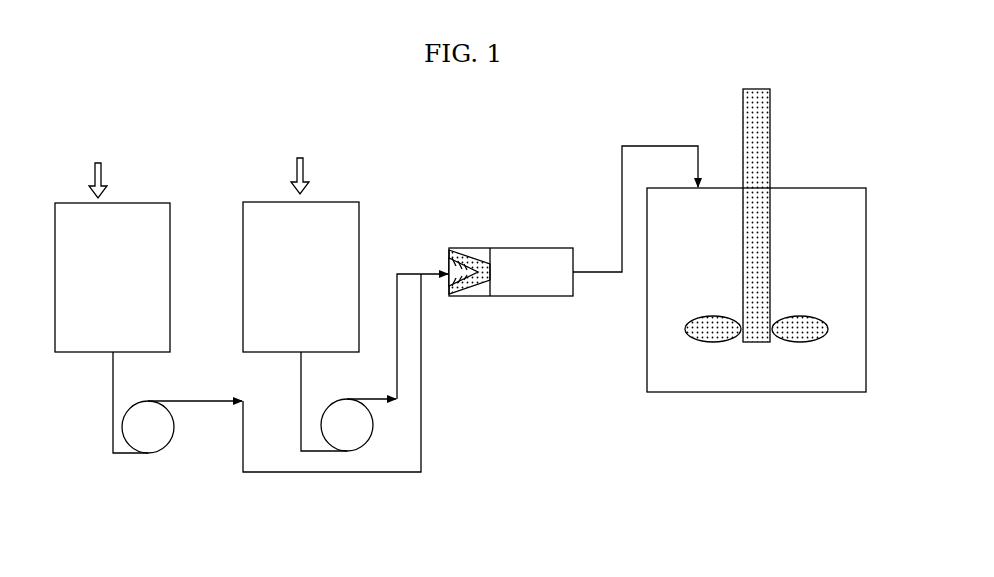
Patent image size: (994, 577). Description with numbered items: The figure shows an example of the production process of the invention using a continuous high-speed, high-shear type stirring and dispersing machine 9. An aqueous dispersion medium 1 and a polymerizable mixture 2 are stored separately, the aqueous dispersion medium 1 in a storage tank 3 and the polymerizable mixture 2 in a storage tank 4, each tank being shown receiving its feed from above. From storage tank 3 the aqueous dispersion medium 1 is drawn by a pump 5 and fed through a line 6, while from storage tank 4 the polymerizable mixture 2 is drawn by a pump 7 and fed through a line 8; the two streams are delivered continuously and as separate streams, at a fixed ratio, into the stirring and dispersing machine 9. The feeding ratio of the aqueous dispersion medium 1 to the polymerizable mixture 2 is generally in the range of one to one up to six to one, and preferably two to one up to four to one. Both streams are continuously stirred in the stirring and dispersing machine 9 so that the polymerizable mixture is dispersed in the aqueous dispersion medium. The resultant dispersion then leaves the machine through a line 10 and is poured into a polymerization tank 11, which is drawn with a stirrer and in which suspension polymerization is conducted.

The aqueous dispersion medium 1 is at (98, 167).
The polymerizable mixture 2 is at (300, 162).
The storage tank 3 is at (170, 252).
The storage tank 4 is at (359, 250).
The pump 5 is at (174, 430).
The line 6 is at (421, 390).
The pump 7 is at (373, 430).
The line 8 is at (397, 374).
The continuous high-speed, high-shear type stirring and dispersing machine 9 is at (538, 297).
The line 10 is at (622, 186).
The polymerization tank 11 is at (762, 392).